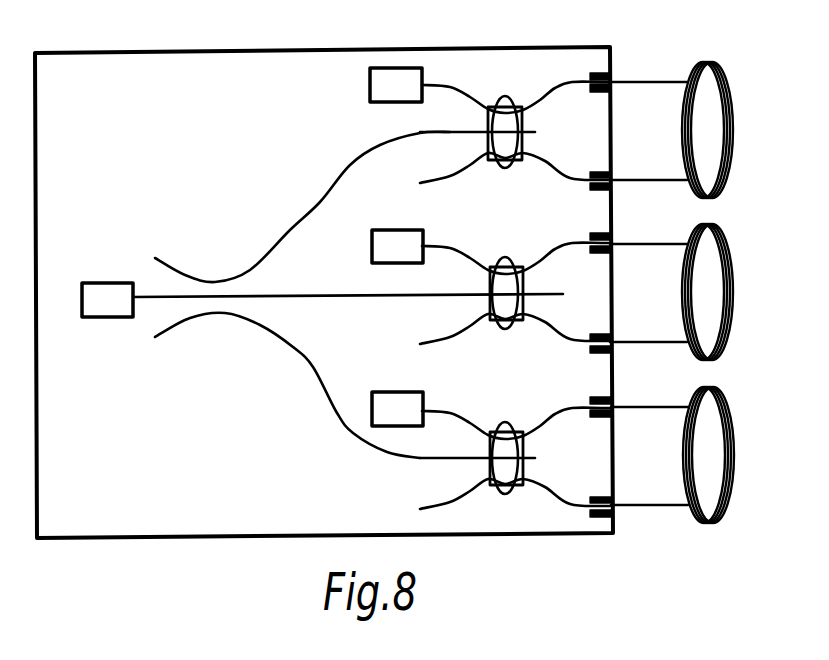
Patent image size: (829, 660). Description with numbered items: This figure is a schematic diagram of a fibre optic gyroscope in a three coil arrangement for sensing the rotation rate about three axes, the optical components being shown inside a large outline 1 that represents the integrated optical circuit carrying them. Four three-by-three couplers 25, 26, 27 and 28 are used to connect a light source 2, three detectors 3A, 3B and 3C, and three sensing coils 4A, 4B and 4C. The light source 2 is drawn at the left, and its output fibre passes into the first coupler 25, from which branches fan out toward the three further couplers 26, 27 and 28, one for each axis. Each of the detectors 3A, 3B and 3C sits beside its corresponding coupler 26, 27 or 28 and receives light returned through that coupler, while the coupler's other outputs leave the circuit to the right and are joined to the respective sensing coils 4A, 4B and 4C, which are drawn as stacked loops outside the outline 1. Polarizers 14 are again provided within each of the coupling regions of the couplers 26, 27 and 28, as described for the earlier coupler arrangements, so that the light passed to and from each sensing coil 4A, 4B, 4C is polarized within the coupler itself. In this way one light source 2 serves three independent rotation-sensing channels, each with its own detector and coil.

The housing 1 is at (110, 73).
The light source 2 is at (103, 291).
The detector 3A is at (385, 88).
The detector 3B is at (385, 251).
The detector 3C is at (385, 398).
The sensing coil 4A is at (729, 102).
The sensing coil 4B is at (701, 292).
The sensing coil 4C is at (701, 455).
The polarizer 14 is at (526, 124).
The 3×3 coupler 25 is at (214, 271).
The 3×3 coupler 26 is at (519, 96).
The 3×3 coupler 27 is at (515, 277).
The 3×3 coupler 28 is at (515, 441).